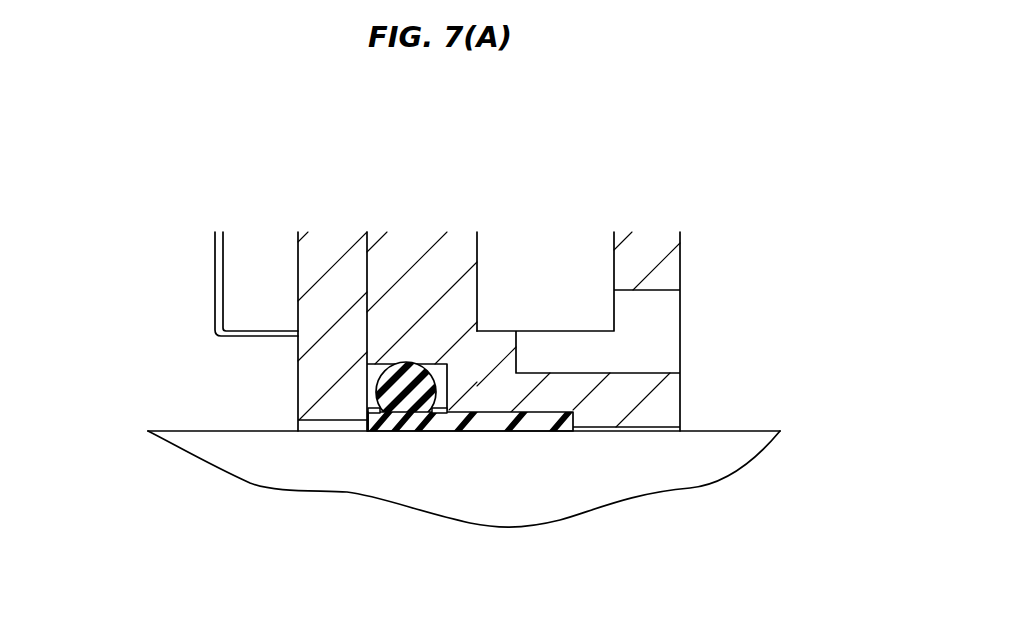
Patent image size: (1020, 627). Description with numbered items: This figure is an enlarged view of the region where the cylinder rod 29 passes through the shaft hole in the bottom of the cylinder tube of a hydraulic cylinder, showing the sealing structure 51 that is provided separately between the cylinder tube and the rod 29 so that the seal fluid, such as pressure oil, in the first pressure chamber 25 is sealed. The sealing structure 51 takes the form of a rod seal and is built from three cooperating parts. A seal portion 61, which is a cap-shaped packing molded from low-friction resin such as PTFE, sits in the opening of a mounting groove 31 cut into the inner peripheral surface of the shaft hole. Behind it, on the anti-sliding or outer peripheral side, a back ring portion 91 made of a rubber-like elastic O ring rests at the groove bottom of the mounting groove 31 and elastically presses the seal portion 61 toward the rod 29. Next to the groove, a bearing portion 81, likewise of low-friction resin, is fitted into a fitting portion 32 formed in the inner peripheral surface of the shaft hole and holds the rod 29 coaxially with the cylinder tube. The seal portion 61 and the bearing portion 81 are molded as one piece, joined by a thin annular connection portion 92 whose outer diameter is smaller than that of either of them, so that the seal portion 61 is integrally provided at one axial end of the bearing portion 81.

The first pressure chamber 25 is at (807, 284).
The cylinder rod 29 is at (215, 440).
The mounting groove 31 is at (408, 390).
The fitting portion 32 is at (478, 403).
The sealing structure 51 is at (350, 440).
The seal portion 61 is at (380, 431).
The bearing portion 81 is at (507, 432).
The back ring portion 91 is at (407, 432).
The connection portion 92 is at (455, 432).